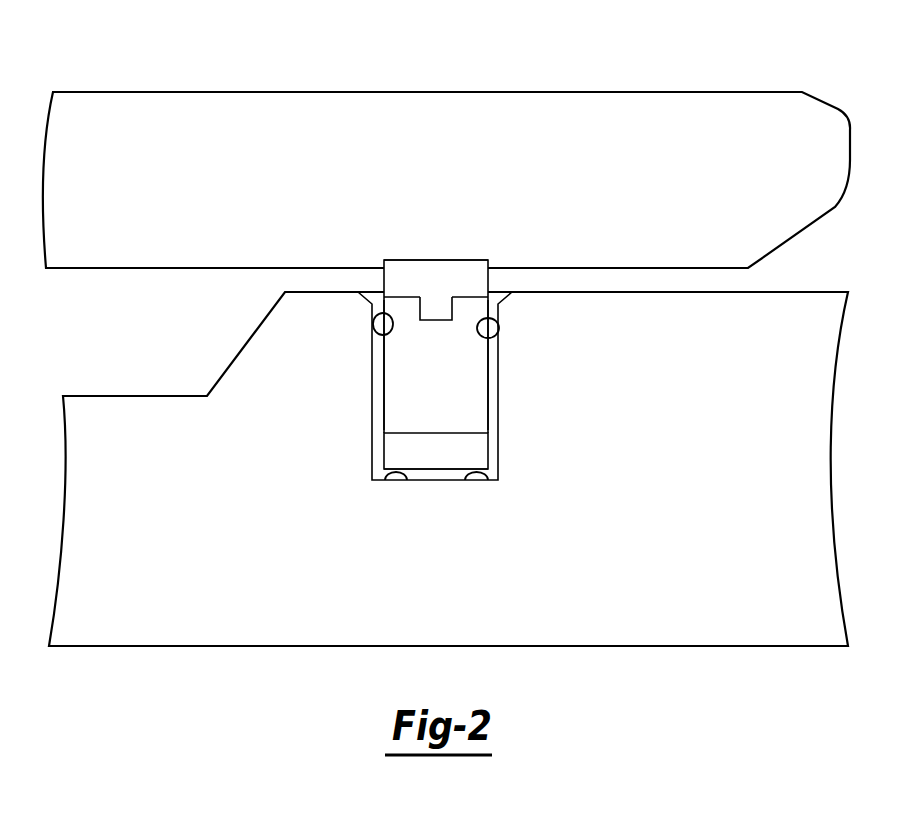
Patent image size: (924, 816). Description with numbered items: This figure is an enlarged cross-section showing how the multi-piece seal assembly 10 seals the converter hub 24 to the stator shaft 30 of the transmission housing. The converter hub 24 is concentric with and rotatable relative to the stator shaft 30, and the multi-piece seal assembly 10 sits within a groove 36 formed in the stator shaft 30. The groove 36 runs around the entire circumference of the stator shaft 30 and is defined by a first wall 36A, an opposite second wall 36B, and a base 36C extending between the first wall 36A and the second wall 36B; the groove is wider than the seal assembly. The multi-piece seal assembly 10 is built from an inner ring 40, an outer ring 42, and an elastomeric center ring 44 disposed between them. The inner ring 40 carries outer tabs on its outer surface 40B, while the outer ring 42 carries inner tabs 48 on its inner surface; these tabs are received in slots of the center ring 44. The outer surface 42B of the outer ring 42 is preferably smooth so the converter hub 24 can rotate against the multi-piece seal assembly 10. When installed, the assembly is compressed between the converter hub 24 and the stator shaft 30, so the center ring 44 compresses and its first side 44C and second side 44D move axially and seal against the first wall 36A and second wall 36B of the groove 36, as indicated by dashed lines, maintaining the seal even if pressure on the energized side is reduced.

The multi-piece seal assembly 10 is at (492, 236).
The converter hub 24 is at (720, 92).
The stator shaft 30 is at (830, 290).
The outer ring 42 is at (407, 270).
The outer surface of the outer ring 42B is at (470, 258).
The inner tabs 48 is at (436, 312).
The center ring 44 is at (441, 416).
The first side of the center ring 44C is at (384, 372).
The second side of the center ring 44D is at (488, 372).
The inner ring 40 is at (408, 458).
The outer surface of the inner ring 40B is at (438, 482).
The groove 36 is at (488, 480).
The first wall 36A is at (375, 326).
The second wall 36B is at (500, 334).
The base 36C is at (385, 480).